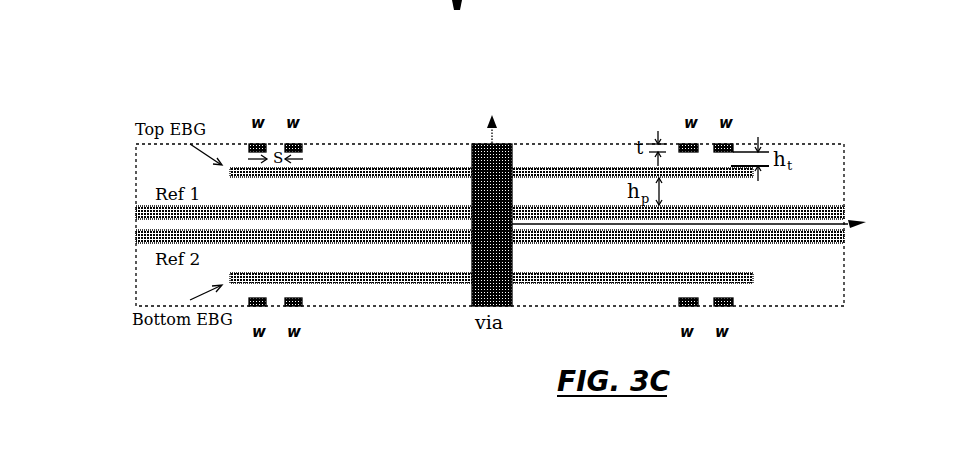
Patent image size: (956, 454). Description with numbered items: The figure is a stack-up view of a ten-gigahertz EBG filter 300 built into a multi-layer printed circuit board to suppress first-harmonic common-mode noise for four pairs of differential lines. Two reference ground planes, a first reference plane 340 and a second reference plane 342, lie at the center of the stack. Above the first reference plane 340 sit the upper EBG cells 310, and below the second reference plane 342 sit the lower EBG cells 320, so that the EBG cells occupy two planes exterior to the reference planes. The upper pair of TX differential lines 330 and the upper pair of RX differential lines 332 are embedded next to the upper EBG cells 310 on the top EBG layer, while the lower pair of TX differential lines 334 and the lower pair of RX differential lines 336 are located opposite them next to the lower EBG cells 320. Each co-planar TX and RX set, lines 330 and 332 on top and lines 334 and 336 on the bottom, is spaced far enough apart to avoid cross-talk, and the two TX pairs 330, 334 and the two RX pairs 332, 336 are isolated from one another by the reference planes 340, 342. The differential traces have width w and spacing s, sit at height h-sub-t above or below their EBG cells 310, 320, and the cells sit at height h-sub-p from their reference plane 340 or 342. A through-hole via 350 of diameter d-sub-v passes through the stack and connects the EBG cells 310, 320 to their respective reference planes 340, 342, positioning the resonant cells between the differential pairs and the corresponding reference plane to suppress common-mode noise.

The 10-GHz EBG filter 300 is at (166, 51).
The upper EBG cells 310 is at (353, 168).
The lower EBG cells 320 is at (372, 279).
The upper TX pair of differential lines 330 is at (287, 144).
The upper RX pair of differential lines 332 is at (696, 144).
The lower TX pair of differential lines 334 is at (287, 306).
The lower RX pair of differential lines 336 is at (696, 302).
The reference ground plane Ref 1 340 is at (136, 206).
The reference ground plane Ref 2 342 is at (136, 232).
The through-hole via 350 is at (477, 143).